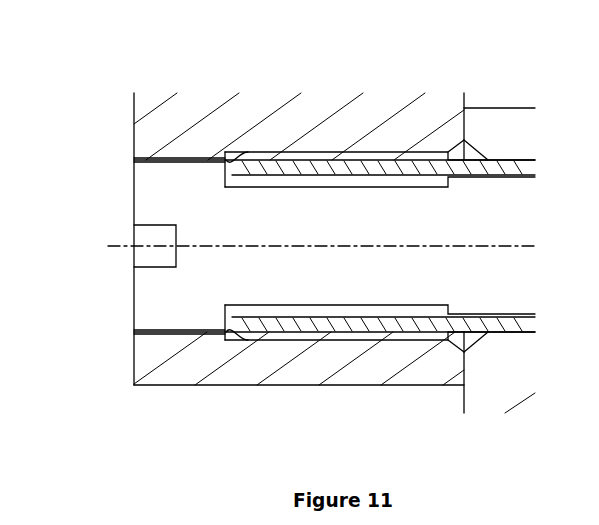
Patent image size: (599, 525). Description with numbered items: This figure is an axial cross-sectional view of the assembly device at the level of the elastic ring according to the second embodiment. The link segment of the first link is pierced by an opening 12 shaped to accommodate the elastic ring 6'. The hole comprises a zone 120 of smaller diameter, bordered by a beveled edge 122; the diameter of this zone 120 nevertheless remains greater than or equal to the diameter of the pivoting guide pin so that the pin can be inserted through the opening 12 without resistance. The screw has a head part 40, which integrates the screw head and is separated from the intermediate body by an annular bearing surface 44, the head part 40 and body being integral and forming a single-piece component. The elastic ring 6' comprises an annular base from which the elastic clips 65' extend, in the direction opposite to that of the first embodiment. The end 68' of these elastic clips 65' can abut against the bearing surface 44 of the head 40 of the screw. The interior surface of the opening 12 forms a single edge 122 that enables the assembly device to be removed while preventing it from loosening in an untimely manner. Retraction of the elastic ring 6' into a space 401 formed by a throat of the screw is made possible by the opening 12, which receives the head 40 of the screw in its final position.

The opening 12 is at (147, 160).
The zone of smaller diameter 120 is at (181, 160).
The edge 122 is at (225, 152).
The space 401 is at (324, 182).
The elastic ring 6' is at (499, 96).
The head part 40 is at (147, 293).
The annular bearing surface 44 is at (225, 308).
The end of elastic clips 68' is at (378, 384).
The elastic clips 65' is at (383, 390).